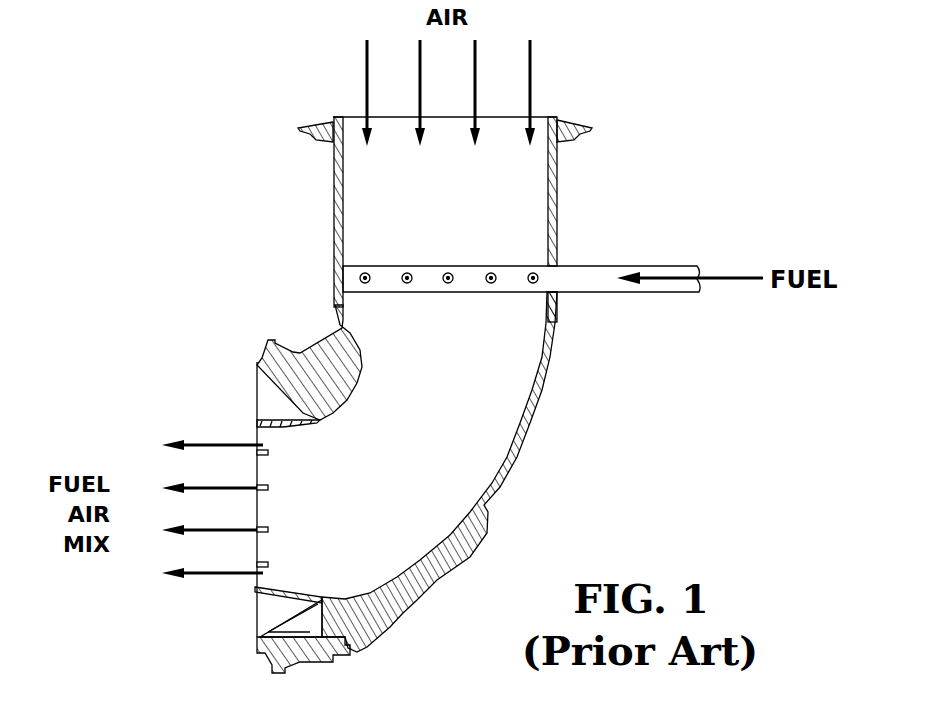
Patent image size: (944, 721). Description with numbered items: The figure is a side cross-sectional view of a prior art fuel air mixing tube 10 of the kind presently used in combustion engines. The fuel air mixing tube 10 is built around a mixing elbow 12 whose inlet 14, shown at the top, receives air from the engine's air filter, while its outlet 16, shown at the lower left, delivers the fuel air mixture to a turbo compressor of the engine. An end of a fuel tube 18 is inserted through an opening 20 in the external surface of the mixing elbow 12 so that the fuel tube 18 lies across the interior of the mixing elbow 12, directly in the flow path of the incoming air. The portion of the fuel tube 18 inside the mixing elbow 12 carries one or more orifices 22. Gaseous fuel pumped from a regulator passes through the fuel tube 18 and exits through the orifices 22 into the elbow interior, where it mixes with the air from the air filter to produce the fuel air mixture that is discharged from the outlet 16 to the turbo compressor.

The fuel air mixing tube 10 is at (281, 112).
The mixing elbow 12 is at (518, 452).
The inlet 14 is at (543, 117).
The outlet 16 is at (255, 582).
The fuel tube 18 is at (652, 266).
The opening 20 is at (557, 296).
The orifices 22 is at (448, 272).